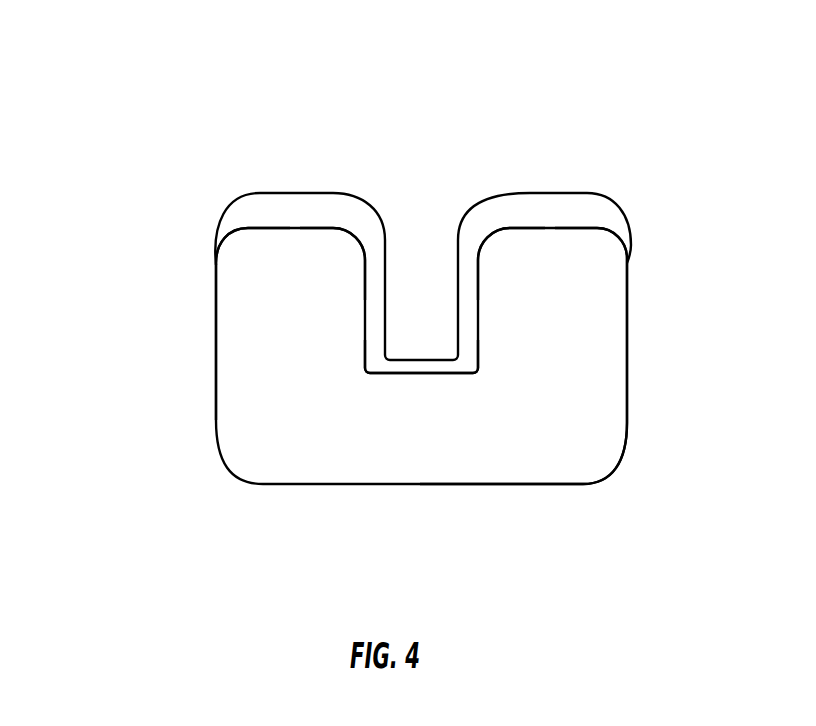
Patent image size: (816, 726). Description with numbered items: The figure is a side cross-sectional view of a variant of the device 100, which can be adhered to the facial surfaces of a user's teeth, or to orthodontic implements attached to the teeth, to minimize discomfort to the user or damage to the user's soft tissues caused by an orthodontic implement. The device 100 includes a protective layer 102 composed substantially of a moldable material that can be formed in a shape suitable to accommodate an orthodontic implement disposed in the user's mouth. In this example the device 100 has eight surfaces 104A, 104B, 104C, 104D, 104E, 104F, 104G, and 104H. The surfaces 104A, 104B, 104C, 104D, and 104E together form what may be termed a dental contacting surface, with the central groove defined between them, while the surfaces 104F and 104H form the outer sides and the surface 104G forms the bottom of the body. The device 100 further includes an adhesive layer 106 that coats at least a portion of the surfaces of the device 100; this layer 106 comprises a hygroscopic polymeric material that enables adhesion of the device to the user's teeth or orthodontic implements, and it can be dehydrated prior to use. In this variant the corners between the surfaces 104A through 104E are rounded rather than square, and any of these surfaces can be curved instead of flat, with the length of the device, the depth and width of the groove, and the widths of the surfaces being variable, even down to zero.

The device 100 is at (146, 62).
The protective layer 102 is at (262, 470).
The surface 104A is at (267, 227).
The surface 104B is at (391, 240).
The surface 104C is at (413, 367).
The surface 104D is at (471, 275).
The surface 104E is at (575, 227).
The surface 104F is at (627, 353).
The surface 104G is at (538, 485).
The surface 104H is at (216, 303).
The adhesive layer 106 is at (557, 193).